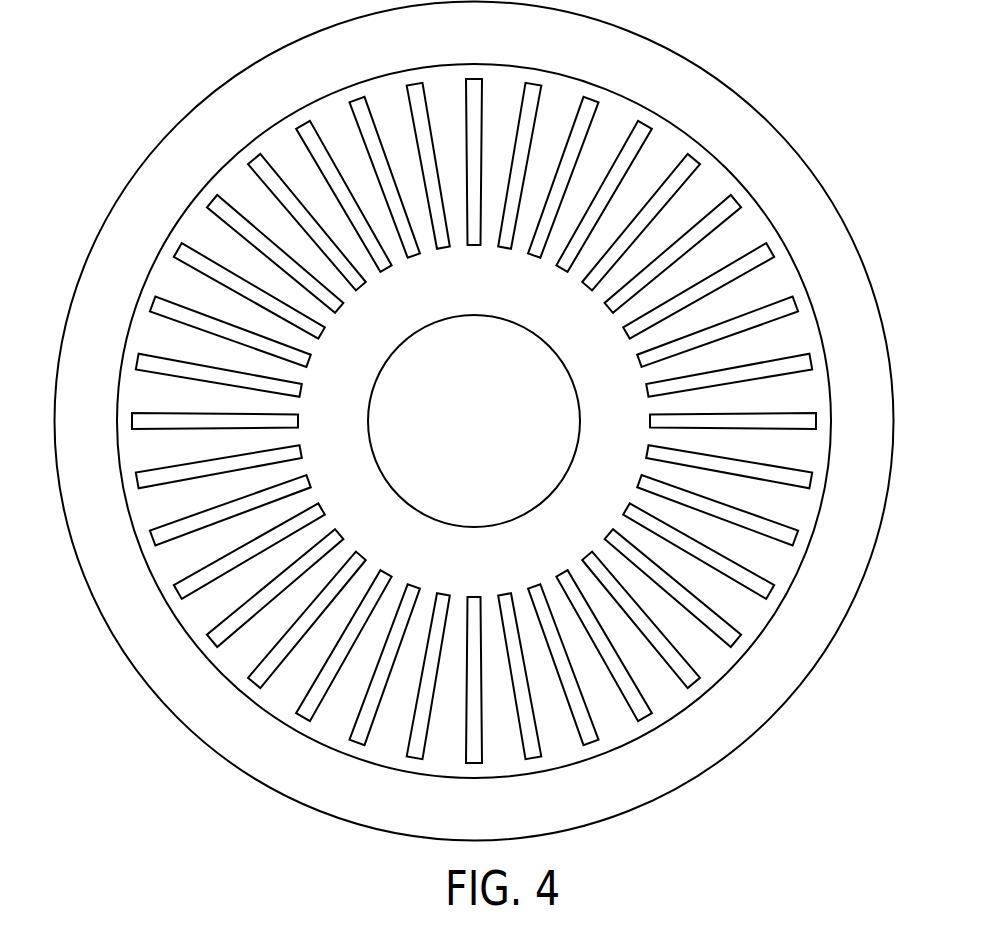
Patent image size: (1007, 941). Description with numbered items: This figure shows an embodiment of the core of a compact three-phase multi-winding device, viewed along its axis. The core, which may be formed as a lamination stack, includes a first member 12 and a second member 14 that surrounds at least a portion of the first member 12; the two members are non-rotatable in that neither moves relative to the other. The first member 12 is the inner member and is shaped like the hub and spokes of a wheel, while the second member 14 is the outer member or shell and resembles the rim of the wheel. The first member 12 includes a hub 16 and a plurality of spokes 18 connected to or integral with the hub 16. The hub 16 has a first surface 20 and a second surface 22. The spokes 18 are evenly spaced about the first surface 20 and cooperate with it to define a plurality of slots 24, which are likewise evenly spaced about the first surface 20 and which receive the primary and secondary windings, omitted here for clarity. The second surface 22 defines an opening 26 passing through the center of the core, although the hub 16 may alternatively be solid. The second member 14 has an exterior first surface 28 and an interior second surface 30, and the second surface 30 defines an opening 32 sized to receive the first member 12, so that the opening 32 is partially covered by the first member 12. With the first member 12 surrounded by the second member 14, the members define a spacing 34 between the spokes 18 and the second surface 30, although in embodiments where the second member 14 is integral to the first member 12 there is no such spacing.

The first member 12 is at (614, 380).
The second member 14 is at (504, 421).
The hub 16 is at (453, 444).
The spokes 18 is at (502, 421).
The first surface 20 is at (302, 403).
The second surface 22 is at (370, 437).
The slots 24 is at (499, 421).
The opening 26 is at (453, 421).
The first surface 28 is at (893, 383).
The second surface 30 is at (830, 397).
The opening 32 is at (812, 460).
The spacing 34 is at (792, 567).